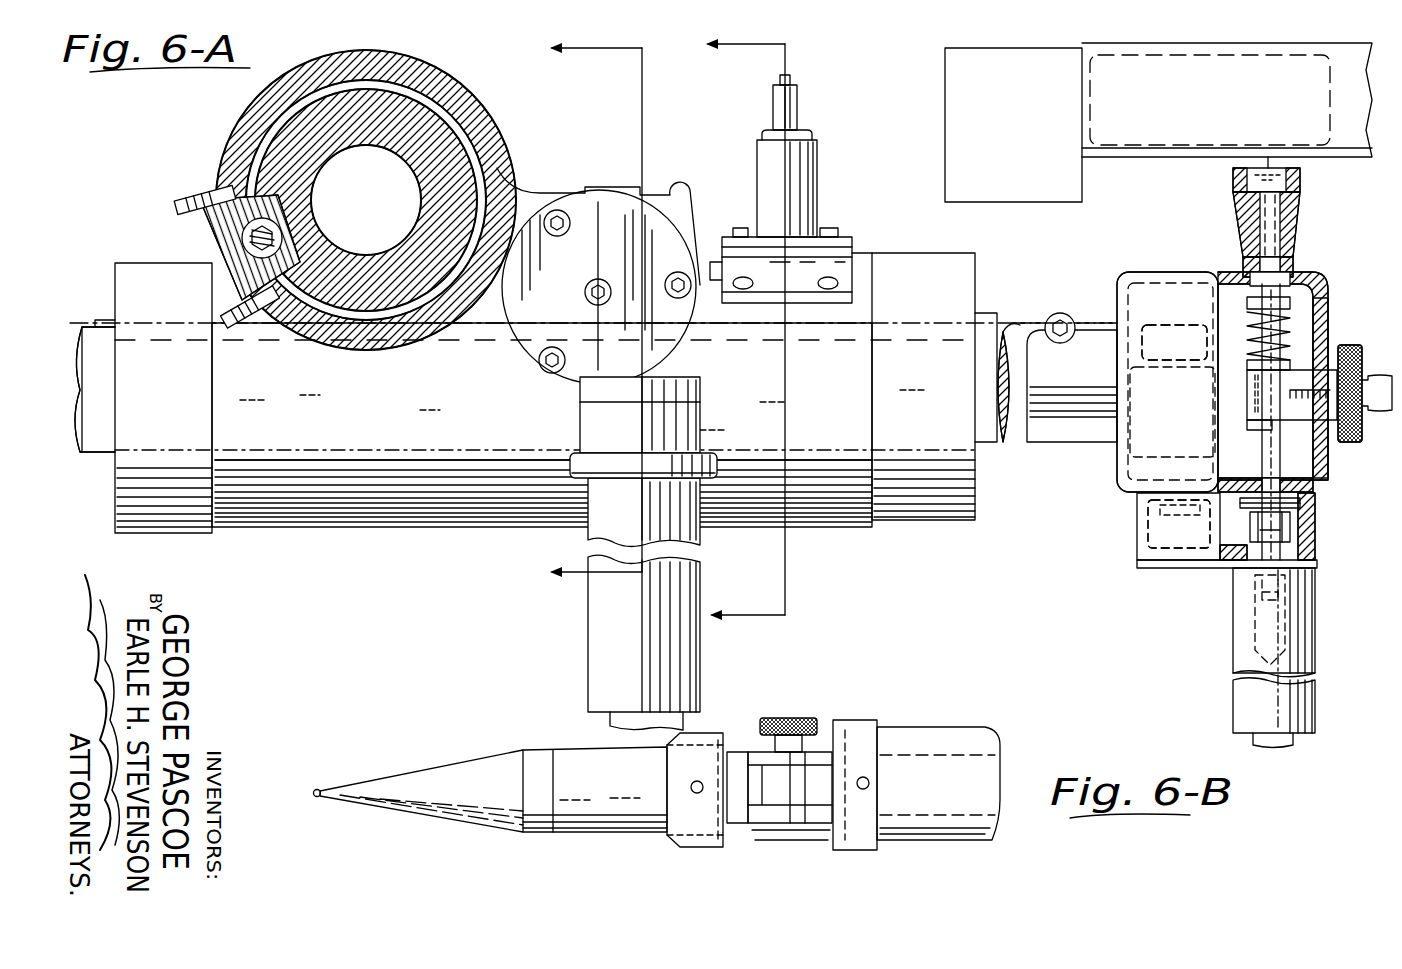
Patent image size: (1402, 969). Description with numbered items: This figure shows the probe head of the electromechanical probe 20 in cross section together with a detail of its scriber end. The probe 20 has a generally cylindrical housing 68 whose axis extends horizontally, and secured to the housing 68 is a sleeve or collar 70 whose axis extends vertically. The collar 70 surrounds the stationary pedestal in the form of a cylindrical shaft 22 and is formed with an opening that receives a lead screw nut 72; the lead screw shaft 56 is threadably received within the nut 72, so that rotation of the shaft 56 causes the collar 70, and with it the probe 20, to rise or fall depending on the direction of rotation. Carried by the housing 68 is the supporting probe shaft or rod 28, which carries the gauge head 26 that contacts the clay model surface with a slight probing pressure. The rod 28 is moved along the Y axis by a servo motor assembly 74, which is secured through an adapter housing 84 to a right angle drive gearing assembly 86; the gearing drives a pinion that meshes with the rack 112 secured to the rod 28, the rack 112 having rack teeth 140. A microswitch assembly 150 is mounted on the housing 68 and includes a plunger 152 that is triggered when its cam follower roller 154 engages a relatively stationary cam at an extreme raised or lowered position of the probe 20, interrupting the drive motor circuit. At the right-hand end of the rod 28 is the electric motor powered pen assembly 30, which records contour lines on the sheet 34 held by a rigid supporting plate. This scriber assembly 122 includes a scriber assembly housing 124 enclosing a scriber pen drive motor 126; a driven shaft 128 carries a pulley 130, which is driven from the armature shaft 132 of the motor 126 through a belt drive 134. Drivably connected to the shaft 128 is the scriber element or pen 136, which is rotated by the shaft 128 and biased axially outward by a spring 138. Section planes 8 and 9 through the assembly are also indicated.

In FIG. 6A, the electromechanical probe 20 is at (282, 530).
In FIG. 6A, the cylindrical housing 68 is at (367, 497).
In FIG. 6A, the probe shaft or rod 28 is at (85, 330).
In FIG. 6B, the probe shaft or rod 28 is at (1022, 330).
In FIG. 6A, the sleeve or collar 70 is at (233, 138).
In FIG. 6A, the cylindrical shaft 22 is at (455, 163).
In FIG. 6A, the lead screw shaft 56 is at (250, 250).
In FIG. 6A, the lead screw nut 72 is at (200, 193).
In FIG. 6A, the right angle drive gearing assembly 86 is at (645, 193).
In FIG. 6A, the servo motor assembly 74 is at (600, 633).
In FIG. 6A, the adapter housing 84 is at (578, 465).
In FIG. 6A, the microswitch assembly 150 is at (812, 168).
In FIG. 6A, the plunger 152 is at (797, 113).
In FIG. 6A, the cam follower roller 154 is at (790, 80).
In FIG. 6A, the section line 8 is at (577, 314).
In FIG. 6A, the section line 9 is at (739, 316).
In FIG. 6A, the gauge head 26 is at (683, 849).
In FIG. 6B, the sheet 34 is at (1140, 160).
In FIG. 6B, the scriber element or pen 136 is at (1273, 165).
In FIG. 6B, the electric motor powered pen assembly 30 is at (1165, 268).
In FIG. 6B, the spring 138 is at (1322, 322).
In FIG. 6B, the scriber assembly housing 124 is at (1317, 460).
In FIG. 6B, the driven shaft 128 is at (1317, 498).
In FIG. 6B, the pulley 130 is at (1317, 527).
In FIG. 6B, the scriber pen drive motor 126 is at (1148, 432).
In FIG. 6B, the scriber assembly 122 is at (1118, 480).
In FIG. 6B, the armature shaft 132 is at (1145, 495).
In FIG. 6B, the belt drive 134 is at (1110, 535).
In FIG. 6B, the rack teeth 140 is at (1010, 320).
In FIG. 6B, the rack 112 is at (998, 318).